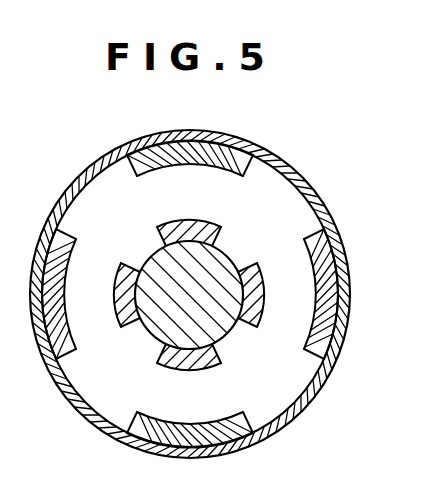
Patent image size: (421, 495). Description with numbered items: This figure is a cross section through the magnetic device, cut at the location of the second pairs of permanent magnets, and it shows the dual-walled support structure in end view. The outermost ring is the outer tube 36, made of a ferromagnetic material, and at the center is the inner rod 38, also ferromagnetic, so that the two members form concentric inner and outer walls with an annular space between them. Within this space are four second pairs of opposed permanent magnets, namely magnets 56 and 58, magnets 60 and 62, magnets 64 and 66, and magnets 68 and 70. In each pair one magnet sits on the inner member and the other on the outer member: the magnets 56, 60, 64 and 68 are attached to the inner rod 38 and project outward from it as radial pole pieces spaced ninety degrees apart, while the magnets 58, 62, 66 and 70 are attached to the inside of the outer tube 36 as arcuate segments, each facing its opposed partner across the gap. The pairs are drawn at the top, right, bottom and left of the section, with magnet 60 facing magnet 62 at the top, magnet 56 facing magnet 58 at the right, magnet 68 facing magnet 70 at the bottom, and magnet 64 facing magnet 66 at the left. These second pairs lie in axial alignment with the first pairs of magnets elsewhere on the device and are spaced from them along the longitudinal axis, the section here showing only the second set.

The outer tube 36 is at (306, 182).
The inner rod 38 is at (148, 262).
The permanent magnet 56 is at (264, 272).
The permanent magnet 58 is at (312, 322).
The permanent magnet 60 is at (180, 220).
The permanent magnet 62 is at (196, 168).
The permanent magnet 64 is at (120, 328).
The permanent magnet 66 is at (63, 282).
The permanent magnet 68 is at (185, 372).
The permanent magnet 70 is at (215, 424).